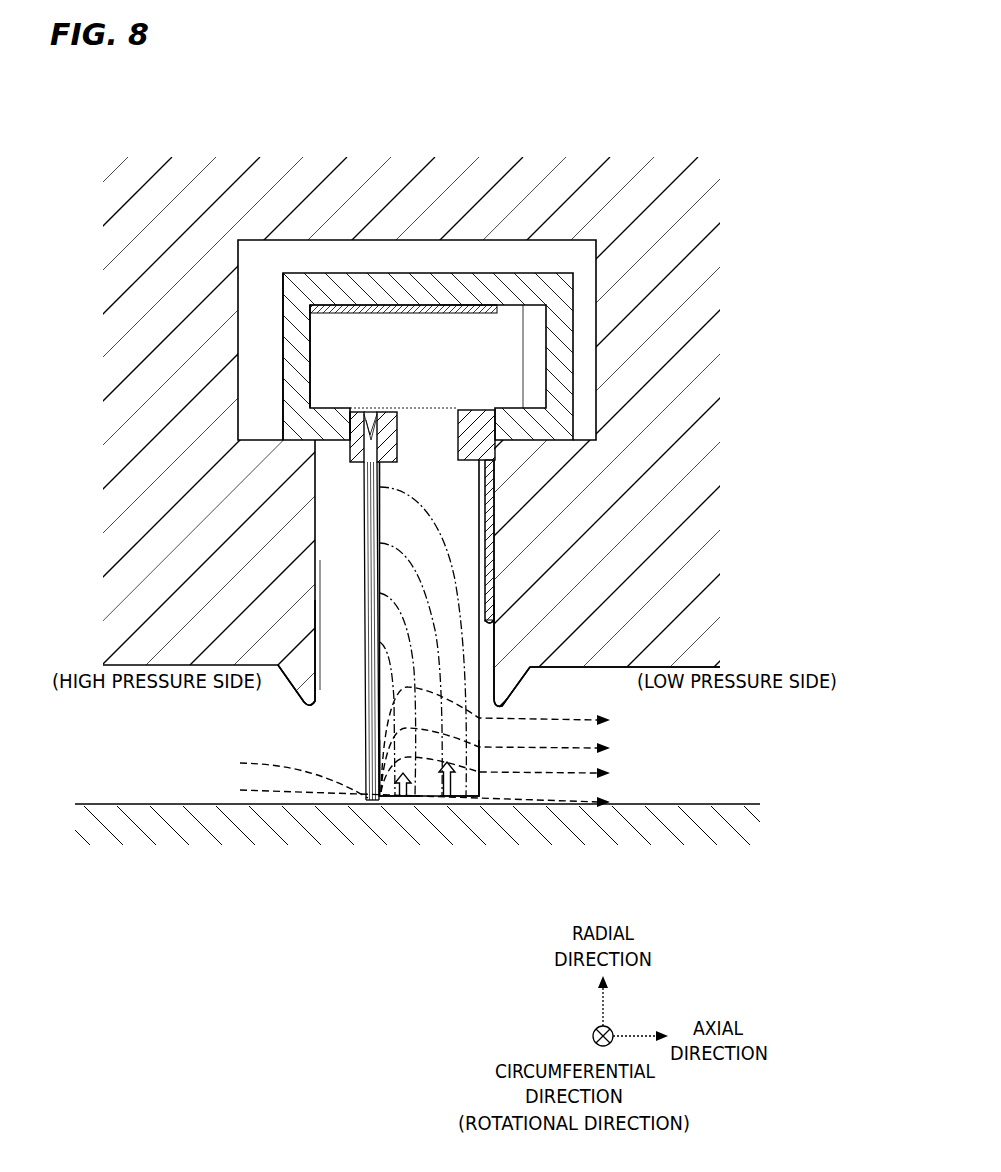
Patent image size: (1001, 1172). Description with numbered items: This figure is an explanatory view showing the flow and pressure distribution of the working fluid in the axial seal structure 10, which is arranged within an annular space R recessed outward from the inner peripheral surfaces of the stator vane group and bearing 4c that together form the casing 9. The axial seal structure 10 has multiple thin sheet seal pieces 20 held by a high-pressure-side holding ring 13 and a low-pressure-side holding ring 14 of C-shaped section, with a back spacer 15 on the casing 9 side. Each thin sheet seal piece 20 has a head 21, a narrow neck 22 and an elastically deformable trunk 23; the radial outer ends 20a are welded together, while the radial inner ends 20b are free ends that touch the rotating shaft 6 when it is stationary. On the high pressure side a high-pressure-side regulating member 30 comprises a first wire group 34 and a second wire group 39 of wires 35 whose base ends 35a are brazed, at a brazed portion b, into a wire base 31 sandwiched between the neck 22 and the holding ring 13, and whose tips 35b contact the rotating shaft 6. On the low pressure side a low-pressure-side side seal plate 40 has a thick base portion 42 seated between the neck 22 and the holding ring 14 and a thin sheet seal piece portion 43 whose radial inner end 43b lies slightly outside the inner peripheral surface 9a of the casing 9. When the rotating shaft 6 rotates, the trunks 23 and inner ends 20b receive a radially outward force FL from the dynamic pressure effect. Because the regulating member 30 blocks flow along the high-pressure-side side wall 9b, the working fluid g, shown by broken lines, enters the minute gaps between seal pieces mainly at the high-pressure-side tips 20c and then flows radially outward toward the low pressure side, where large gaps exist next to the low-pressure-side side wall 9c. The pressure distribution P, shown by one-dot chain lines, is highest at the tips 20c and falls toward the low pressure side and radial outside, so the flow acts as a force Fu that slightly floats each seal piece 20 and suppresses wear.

The casing 9 is at (616, 179).
The rotating shaft 6 is at (167, 842).
The bearing 4c is at (679, 103).
The inner peripheral surface of the casing 9a is at (618, 668).
The high-pressure-side side wall of the recess 9b is at (316, 617).
The low-pressure-side side wall of the recess 9c is at (494, 662).
The axial seal structure 10 is at (431, 263).
The high-pressure-side holding ring 13 is at (290, 345).
The low-pressure-side holding ring 14 is at (565, 310).
The back spacer 15 is at (428, 303).
The thin sheet seal piece 20 is at (598, 528).
The radial outer end of the thin sheet seal piece 20a is at (460, 303).
The radial inner end of the thin sheet seal piece 20b is at (480, 800).
The high-pressure-side tip 20c is at (384, 806).
The head 21 is at (508, 352).
The neck 22 is at (430, 430).
The trunk 23 is at (447, 520).
The high-pressure-side regulating member 30 is at (220, 636).
The wire base 31 is at (353, 455).
The first wire group 34 is at (363, 497).
The wire 35 is at (245, 636).
The base end of the wire 35a is at (375, 420).
The tip of the wire 35b is at (372, 806).
The second wire group 39 is at (378, 515).
The low-pressure-side regulating member (low-pressure-side side seal plate) 40 is at (638, 525).
The base portion 42 is at (482, 448).
The thin sheet seal piece portion 43 is at (490, 497).
The radial inner end of the thin sheet seal piece portion 43b is at (494, 640).
The brazed portion b is at (353, 427).
The annular space R is at (343, 576).
The pressure distribution P is at (440, 613).
The working fluid g is at (583, 772).
The floating force Fu is at (403, 797).
The radially outward force FL is at (447, 790).